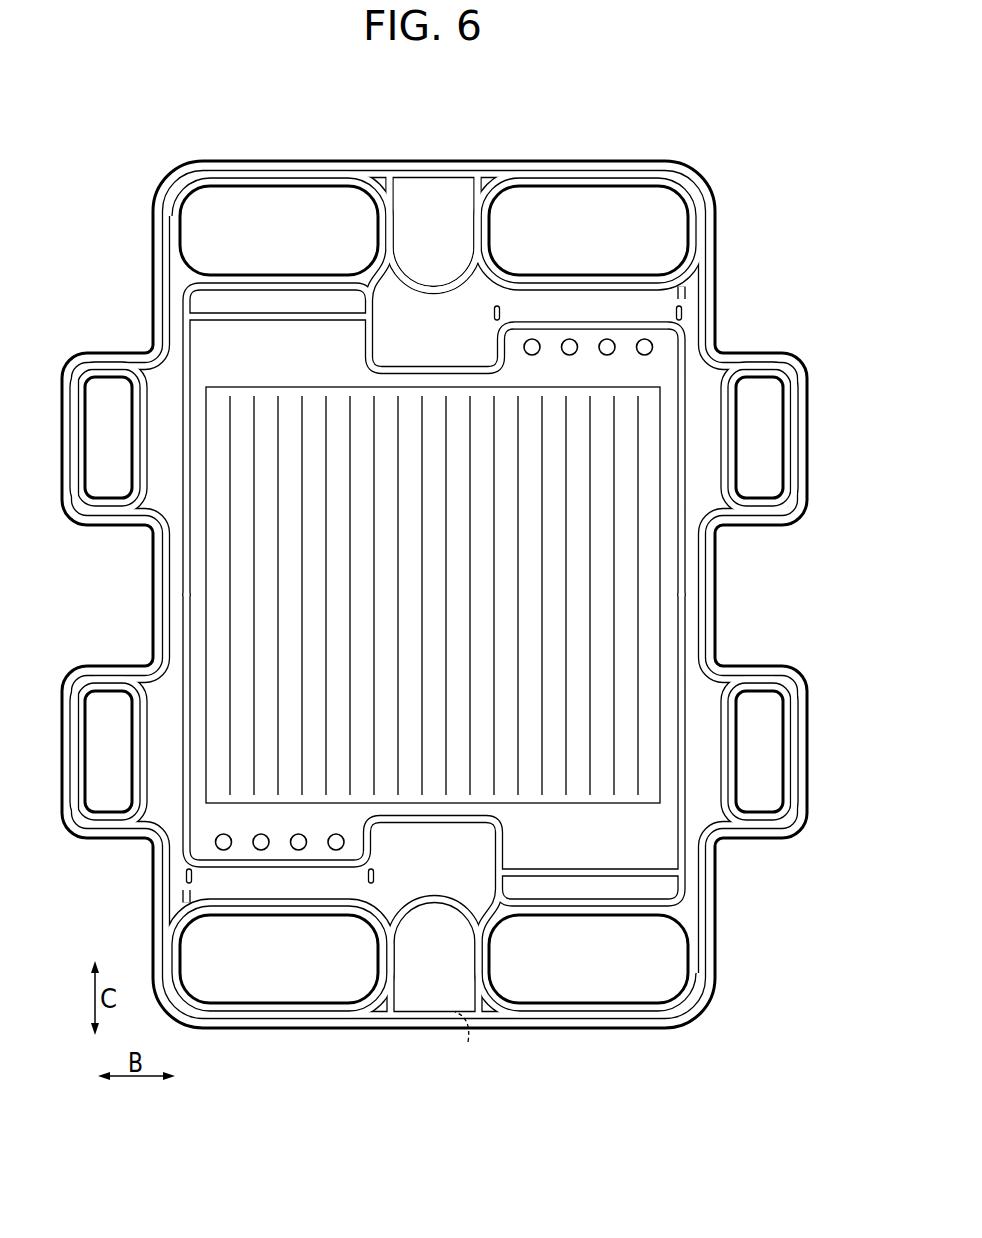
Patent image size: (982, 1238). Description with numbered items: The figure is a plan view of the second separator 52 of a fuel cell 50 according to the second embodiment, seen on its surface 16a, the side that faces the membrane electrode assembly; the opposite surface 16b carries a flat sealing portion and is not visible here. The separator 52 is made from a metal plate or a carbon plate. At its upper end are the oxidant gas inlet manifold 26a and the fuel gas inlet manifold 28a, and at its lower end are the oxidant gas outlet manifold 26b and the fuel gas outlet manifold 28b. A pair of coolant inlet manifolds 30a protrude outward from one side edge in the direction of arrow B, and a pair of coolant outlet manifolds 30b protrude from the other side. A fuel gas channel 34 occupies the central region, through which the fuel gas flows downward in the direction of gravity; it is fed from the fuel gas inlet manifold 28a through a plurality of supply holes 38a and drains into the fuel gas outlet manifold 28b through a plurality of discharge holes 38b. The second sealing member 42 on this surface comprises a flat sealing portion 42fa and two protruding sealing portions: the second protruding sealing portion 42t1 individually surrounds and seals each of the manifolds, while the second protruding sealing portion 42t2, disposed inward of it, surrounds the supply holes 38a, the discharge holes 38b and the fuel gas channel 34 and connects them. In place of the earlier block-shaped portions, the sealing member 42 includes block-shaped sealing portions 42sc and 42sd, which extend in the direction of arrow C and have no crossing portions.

The surface of the second separator 16a is at (436, 1013).
The surface of the second separator 16b is at (470, 1051).
The oxidant gas inlet manifold 26a is at (297, 210).
The oxidant gas outlet manifold 26b is at (612, 987).
The fuel gas inlet manifold 28a is at (608, 211).
The fuel gas outlet manifold 28b is at (303, 985).
The coolant inlet manifolds 30a is at (111, 393).
The coolant outlet manifolds 30b is at (758, 484).
The fuel gas channel 34 is at (627, 598).
The supply holes 38a is at (653, 347).
The discharge holes 38b is at (214, 845).
The second sealing member 42 is at (397, 162).
The second protruding sealing portion 42t1 is at (488, 183).
The second protruding sealing portion 42t2 is at (547, 323).
The flat sealing portion 42fa is at (635, 303).
The block-shaped sealing portion 42sc is at (684, 310).
The block-shaped sealing portion 42sd is at (183, 881).
The fuel cell 50 is at (610, 71).
The second separator 52 is at (568, 71).